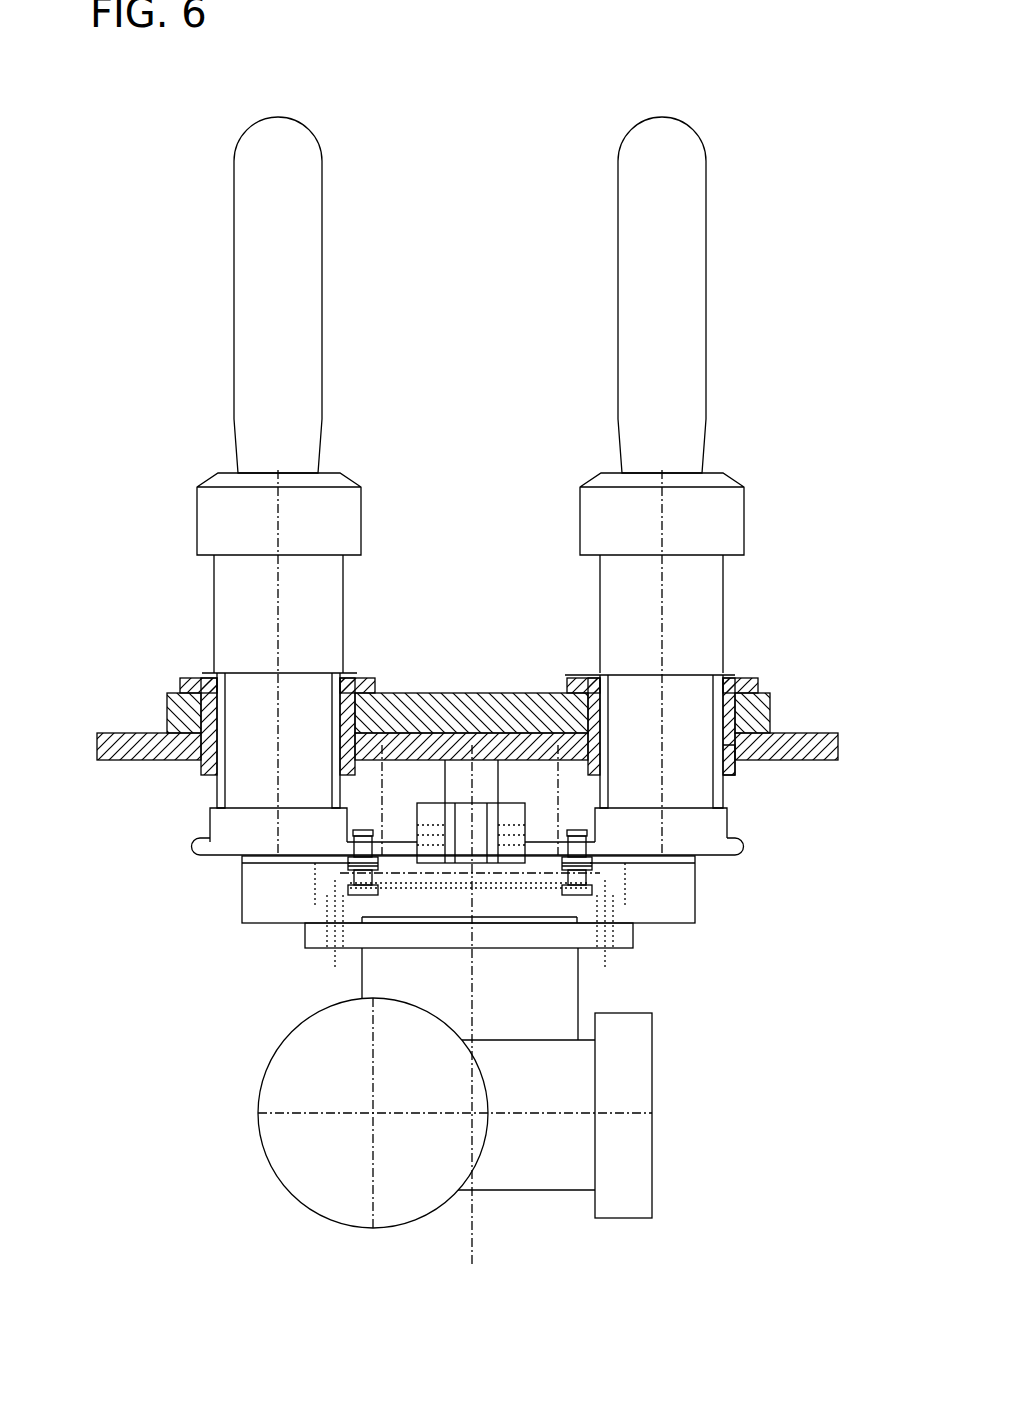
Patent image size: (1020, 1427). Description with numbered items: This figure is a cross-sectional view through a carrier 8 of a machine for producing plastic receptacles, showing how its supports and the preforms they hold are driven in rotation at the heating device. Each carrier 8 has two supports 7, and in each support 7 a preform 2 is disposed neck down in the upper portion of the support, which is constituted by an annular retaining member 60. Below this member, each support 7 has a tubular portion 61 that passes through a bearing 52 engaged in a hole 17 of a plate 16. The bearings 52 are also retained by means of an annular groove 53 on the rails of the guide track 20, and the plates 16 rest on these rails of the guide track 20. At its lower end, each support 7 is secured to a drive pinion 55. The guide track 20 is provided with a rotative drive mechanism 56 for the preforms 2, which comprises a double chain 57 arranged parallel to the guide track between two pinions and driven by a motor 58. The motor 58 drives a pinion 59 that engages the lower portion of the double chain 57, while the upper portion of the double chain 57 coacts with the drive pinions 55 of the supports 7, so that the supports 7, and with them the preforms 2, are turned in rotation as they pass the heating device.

The preform 2 is at (680, 297).
The support 7 is at (728, 602).
The carrier 8 is at (788, 683).
The plate 16 is at (755, 722).
The hole 17 is at (597, 675).
The guide track 20 is at (832, 752).
The bearing 52 is at (737, 685).
The annular groove 53 is at (737, 752).
The drive pinion 55 is at (748, 850).
The rotative drive mechanism 56 is at (278, 932).
The double chain 57 is at (592, 880).
The motor 58 is at (545, 1006).
The pinion 59 is at (514, 865).
The annular retaining member 60 is at (215, 530).
The tubular portion 61 is at (237, 620).